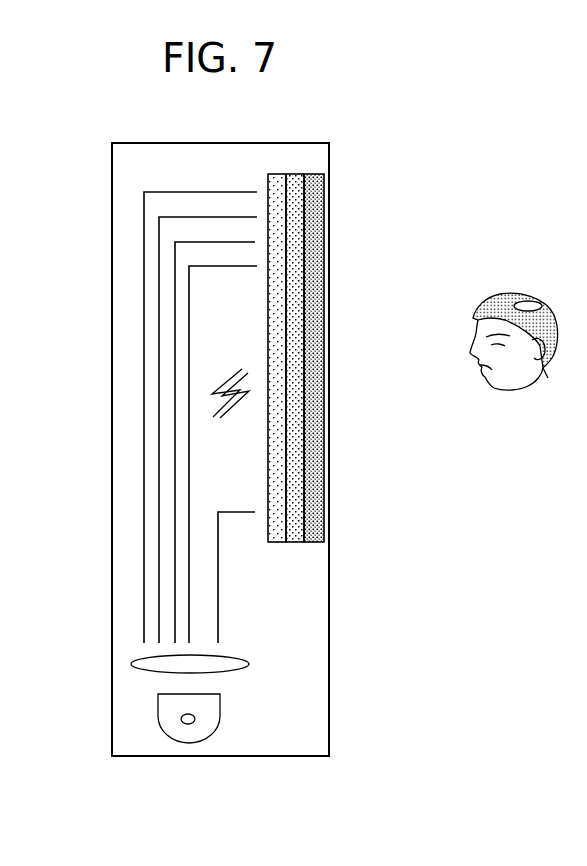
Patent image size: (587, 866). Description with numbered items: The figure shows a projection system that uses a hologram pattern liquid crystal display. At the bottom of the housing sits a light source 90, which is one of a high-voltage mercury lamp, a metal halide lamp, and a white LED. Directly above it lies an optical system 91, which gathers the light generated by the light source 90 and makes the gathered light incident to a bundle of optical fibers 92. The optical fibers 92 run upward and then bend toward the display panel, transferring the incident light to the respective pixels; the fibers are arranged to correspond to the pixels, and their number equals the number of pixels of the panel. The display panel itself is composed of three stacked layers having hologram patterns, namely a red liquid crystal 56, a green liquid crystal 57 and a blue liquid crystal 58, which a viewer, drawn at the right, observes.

The red liquid crystal 56 is at (278, 228).
The green liquid crystal 57 is at (296, 272).
The blue liquid crystal 58 is at (313, 316).
The light source 90 is at (170, 720).
The optical system 91 is at (131, 664).
The optical fibers 92 is at (140, 367).